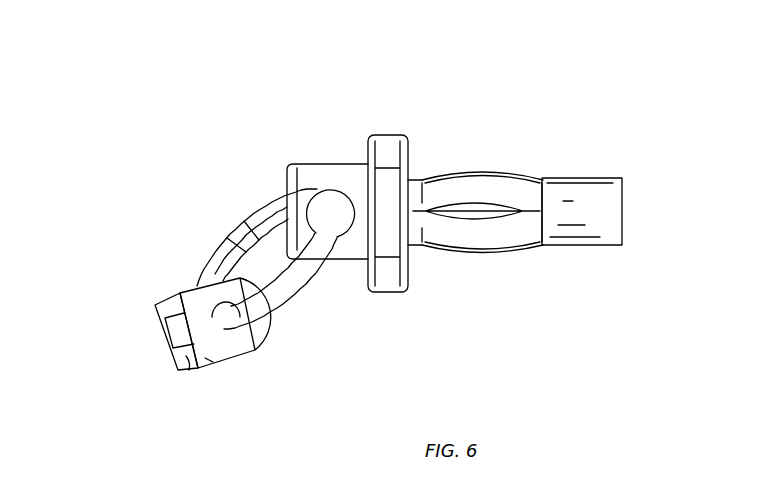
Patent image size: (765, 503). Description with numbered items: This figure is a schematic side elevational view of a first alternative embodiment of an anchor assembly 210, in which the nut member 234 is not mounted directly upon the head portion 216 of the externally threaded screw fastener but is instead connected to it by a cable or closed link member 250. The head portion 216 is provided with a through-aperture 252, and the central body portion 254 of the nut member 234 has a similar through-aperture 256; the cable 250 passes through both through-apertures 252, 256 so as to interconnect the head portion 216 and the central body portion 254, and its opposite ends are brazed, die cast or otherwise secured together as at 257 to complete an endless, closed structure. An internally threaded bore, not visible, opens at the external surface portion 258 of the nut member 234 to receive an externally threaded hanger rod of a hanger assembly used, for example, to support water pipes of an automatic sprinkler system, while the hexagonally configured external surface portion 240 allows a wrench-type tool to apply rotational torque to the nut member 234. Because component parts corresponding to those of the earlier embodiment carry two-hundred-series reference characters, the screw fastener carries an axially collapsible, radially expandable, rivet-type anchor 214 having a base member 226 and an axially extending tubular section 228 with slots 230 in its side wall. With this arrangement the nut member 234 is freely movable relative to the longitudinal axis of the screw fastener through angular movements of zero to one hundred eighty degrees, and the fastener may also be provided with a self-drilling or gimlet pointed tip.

The anchor assembly 210 is at (523, 69).
The rivet-type anchor 214 is at (572, 227).
The head portion 216 is at (321, 178).
The base member 226 is at (392, 140).
The axially extending tubular section 228 is at (516, 173).
The slots 230 is at (477, 208).
The nut member 234 is at (240, 340).
The hexagonally configured external surface portion 240 is at (179, 370).
The cable or closed link member 250 is at (287, 287).
The through-aperture 252 is at (286, 192).
The central body portion 254 is at (190, 288).
The through-aperture 256 is at (213, 360).
The secured ends 257 is at (232, 240).
The external surface portion 258 is at (160, 342).